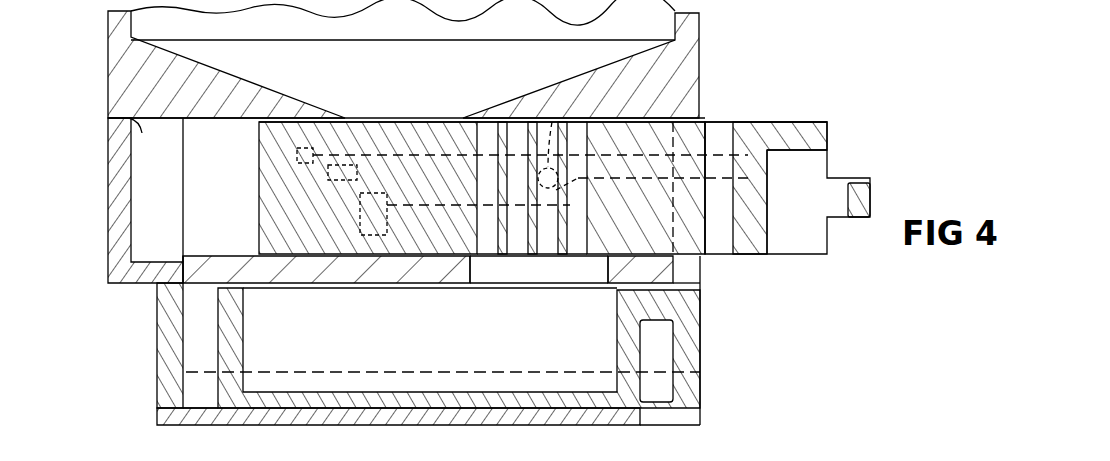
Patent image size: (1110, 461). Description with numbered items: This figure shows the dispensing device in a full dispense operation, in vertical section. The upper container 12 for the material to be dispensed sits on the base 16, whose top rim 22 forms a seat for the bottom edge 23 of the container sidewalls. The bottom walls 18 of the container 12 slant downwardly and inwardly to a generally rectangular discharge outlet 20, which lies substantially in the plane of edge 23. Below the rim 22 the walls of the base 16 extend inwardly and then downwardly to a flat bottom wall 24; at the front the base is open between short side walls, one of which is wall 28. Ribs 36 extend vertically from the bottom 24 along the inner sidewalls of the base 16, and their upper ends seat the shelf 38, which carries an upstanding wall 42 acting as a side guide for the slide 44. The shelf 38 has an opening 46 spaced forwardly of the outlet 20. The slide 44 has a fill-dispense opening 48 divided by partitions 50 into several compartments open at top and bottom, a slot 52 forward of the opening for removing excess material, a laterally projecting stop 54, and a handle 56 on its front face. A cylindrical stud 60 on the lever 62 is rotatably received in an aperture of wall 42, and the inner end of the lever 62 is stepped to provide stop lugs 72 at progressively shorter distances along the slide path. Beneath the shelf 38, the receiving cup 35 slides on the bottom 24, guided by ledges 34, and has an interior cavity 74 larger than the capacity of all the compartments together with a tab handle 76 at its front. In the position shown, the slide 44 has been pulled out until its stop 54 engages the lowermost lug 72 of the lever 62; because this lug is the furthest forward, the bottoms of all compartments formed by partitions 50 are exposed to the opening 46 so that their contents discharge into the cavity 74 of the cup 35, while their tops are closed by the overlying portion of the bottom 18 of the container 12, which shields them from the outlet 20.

The upper container 12 is at (107, 46).
The base 16 is at (106, 283).
The bottom walls 18 is at (153, 117).
The discharge outlet 20 is at (463, 117).
The top rim 22 is at (110, 115).
The bottom edge 23 is at (128, 134).
The bottom wall 24 is at (420, 423).
The side wall 28 is at (701, 278).
The ledges 34 is at (337, 370).
The receiving cup 35 is at (703, 312).
The ribs 36 is at (196, 315).
The shelf 38 is at (198, 269).
The upstanding wall 42 is at (190, 163).
The slide 44 is at (833, 246).
The opening 46 is at (480, 267).
The fill-dispense opening 48 is at (520, 137).
The partitions 50 is at (513, 256).
The slot 52 is at (733, 247).
The stop 54 is at (360, 217).
The handle 56 is at (863, 198).
The cylindrical stud 60 is at (553, 145).
The lever 62 is at (752, 162).
The stop lugs 72 is at (297, 153).
The interior cavity 74 is at (371, 343).
The tab handle 76 is at (695, 386).